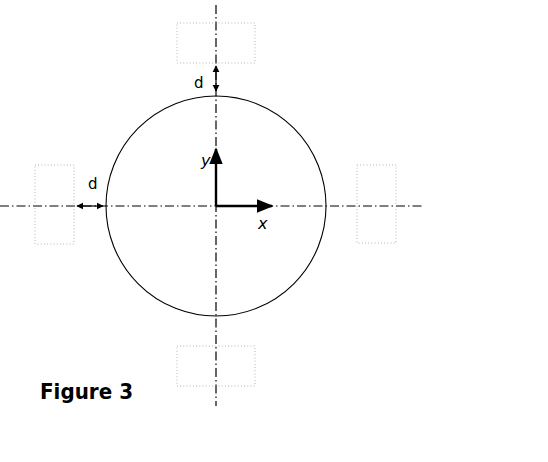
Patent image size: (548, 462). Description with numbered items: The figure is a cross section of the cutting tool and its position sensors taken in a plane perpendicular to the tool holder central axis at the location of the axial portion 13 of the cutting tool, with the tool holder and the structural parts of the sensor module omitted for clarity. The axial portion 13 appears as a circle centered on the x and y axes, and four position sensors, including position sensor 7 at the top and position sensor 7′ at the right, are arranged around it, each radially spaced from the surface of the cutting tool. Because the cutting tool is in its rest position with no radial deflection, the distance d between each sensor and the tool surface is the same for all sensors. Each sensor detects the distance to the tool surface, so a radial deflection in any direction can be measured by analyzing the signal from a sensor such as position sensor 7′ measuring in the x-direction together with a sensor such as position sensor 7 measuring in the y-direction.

The axial portion 13 is at (282, 133).
The position sensor 7 is at (177, 32).
The position sensor 7′ is at (384, 237).